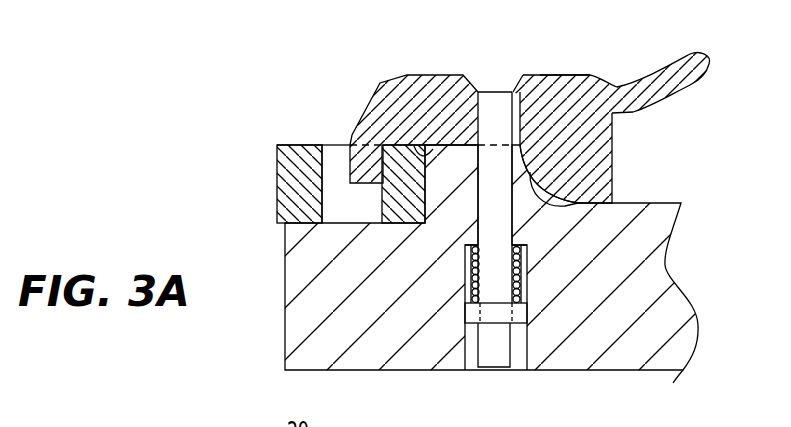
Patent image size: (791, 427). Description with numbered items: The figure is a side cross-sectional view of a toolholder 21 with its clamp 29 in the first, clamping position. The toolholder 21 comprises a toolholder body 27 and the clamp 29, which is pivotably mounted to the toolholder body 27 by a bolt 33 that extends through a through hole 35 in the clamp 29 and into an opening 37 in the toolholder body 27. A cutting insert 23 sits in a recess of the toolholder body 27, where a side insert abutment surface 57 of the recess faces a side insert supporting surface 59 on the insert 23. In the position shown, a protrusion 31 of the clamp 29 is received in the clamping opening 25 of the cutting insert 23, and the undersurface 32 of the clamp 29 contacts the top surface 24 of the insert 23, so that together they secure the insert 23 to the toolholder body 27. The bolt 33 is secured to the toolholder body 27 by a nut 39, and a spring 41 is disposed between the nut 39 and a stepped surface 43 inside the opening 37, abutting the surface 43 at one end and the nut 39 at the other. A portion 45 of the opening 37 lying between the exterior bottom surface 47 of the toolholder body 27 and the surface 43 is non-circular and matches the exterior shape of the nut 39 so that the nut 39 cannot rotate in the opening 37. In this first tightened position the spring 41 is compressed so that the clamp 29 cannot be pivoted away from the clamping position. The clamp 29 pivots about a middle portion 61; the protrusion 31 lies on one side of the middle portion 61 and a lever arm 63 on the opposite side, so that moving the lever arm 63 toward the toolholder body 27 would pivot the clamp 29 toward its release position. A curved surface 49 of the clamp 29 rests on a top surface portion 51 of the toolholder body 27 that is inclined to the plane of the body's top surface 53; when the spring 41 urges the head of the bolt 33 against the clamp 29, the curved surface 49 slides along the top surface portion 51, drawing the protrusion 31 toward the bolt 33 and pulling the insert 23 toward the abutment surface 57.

The toolholder 21 is at (208, 58).
The cutting insert 23 is at (275, 167).
The top surface 24 is at (315, 143).
The clamping opening 25 is at (336, 196).
The toolholder body 27 is at (648, 236).
The clamp 29 is at (368, 78).
The protrusion 31 is at (350, 157).
The undersurface 32 is at (432, 148).
The bolt 33 is at (496, 84).
The through hole 35 is at (520, 117).
The opening 37 is at (470, 374).
The nut 39 is at (518, 312).
The spring 41 is at (521, 277).
The surface 43 is at (468, 250).
The portion of the opening 45 is at (472, 348).
The exterior bottom surface 47 is at (609, 371).
The curved surface 49 is at (587, 197).
The top surface portion 51 is at (585, 218).
The top surface 53 is at (652, 248).
The side insert abutment surface 57 is at (430, 197).
The side insert supporting surface 59 is at (430, 197).
The middle portion 61 is at (568, 75).
The lever arm 63 is at (700, 65).